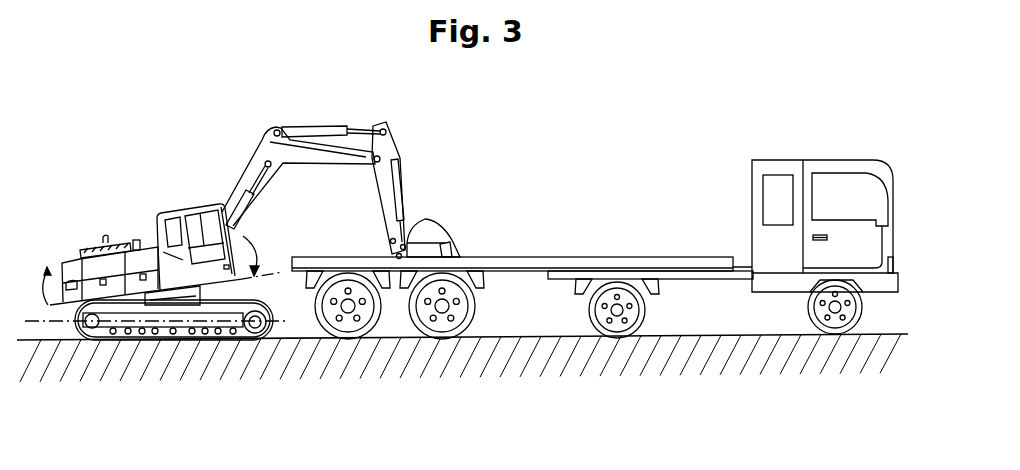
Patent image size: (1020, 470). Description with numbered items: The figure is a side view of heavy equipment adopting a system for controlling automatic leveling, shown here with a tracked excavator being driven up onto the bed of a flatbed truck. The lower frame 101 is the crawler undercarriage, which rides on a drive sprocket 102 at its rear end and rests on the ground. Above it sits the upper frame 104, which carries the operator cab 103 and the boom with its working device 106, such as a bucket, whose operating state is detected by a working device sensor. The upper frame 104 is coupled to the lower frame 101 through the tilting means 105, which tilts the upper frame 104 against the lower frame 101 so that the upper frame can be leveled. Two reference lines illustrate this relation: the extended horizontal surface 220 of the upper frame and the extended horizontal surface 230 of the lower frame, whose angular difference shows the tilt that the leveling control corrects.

The lower frame 101 is at (150, 308).
The drive sprocket 102 is at (246, 331).
The operator cab 103 is at (195, 220).
The upper frame 104 is at (145, 247).
The tilting means 105 is at (195, 307).
The working arm 106 is at (384, 207).
The extended horizontal surface of an upper frame 220 is at (275, 271).
The extended horizontal surface of a lower frame 230 is at (285, 322).